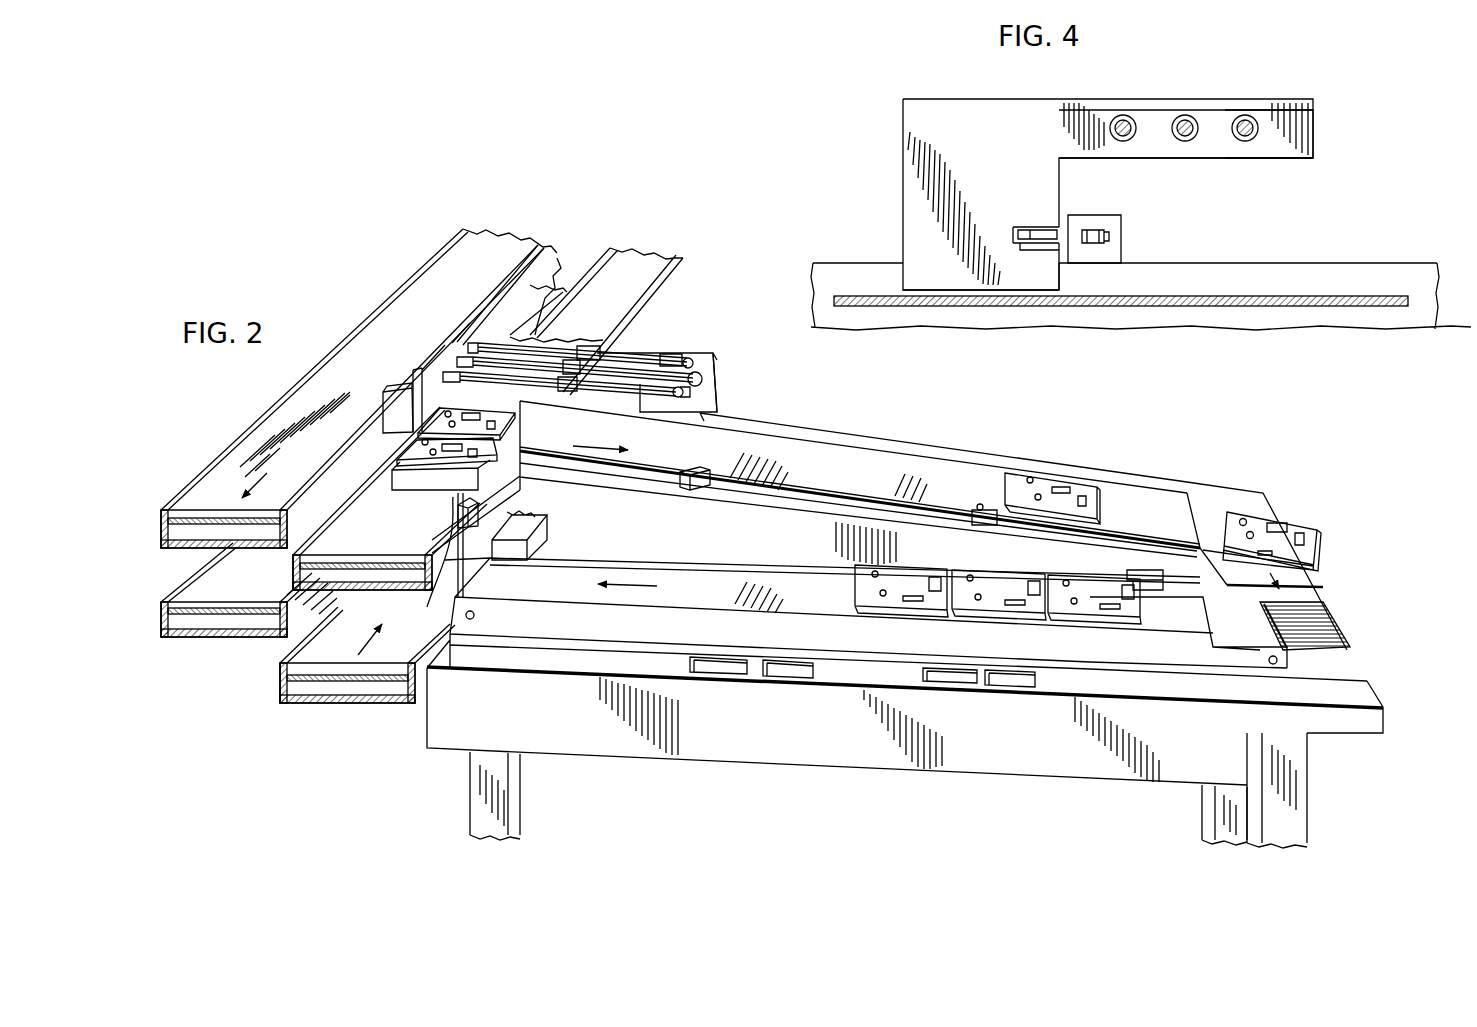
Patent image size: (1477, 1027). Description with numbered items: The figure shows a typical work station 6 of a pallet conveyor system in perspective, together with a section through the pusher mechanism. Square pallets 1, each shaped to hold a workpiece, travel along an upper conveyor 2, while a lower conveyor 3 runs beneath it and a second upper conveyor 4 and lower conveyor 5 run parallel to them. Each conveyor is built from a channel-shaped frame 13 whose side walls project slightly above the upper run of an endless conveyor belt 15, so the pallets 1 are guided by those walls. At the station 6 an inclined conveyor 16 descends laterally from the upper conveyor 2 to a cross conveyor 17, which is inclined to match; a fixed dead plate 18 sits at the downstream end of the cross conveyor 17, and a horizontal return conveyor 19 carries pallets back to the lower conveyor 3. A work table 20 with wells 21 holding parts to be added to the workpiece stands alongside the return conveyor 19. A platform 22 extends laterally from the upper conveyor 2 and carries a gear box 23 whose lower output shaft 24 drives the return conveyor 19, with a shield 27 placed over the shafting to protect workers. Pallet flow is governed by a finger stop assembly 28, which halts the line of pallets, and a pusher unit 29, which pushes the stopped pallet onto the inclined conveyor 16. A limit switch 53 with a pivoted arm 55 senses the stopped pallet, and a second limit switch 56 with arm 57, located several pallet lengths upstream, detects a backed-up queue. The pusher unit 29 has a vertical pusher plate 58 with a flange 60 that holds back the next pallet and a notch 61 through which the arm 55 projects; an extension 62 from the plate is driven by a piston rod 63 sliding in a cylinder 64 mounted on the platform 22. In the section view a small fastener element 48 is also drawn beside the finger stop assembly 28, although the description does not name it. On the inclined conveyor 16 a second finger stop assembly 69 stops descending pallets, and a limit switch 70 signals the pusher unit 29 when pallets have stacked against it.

In FIG. 2, the pallet 1 is at (500, 412).
In FIG. 2, the upper conveyor 2 is at (372, 595).
In FIG. 4, the upper conveyor 2 is at (1322, 232).
In FIG. 2, the lower conveyor 3 is at (337, 705).
In FIG. 2, the second upper conveyor 4 is at (237, 440).
In FIG. 2, the lower conveyor 5 is at (172, 580).
In FIG. 2, the station 6 is at (849, 695).
In FIG. 2, the channel-shaped frame 13 is at (160, 530).
In FIG. 4, the channel-shaped frame 13 is at (1398, 238).
In FIG. 2, the endless conveyor belt 15 is at (418, 297).
In FIG. 4, the endless conveyor belt 15 is at (1296, 306).
In FIG. 2, the inclined conveyor 16 is at (921, 418).
In FIG. 2, the cross conveyor 17 is at (1329, 586).
In FIG. 2, the fixed dead plate 18 is at (1343, 638).
In FIG. 2, the horizontal return conveyor 19 is at (771, 544).
In FIG. 2, the work table 20 is at (1140, 688).
In FIG. 2, the wells 21 is at (789, 679).
In FIG. 2, the platform 22 is at (701, 356).
In FIG. 2, the gear box 23 is at (715, 386).
In FIG. 2, the lower output shaft 24 is at (543, 494).
In FIG. 2, the shield 27 is at (777, 432).
In FIG. 4, the finger stop assembly 28 is at (1121, 212).
In FIG. 2, the pusher unit 29 is at (450, 343).
In FIG. 4, the pusher unit 29 is at (1243, 104).
In FIG. 4, the adjusting screw 48 is at (1110, 236).
In FIG. 4, the limit switch 53 is at (1035, 244).
In FIG. 4, the arm 55 is at (1027, 238).
In FIG. 2, the second limit switch 56 is at (428, 560).
In FIG. 2, the pivoted arm 57 is at (455, 506).
In FIG. 2, the pusher plate 58 is at (431, 386).
In FIG. 4, the pusher plate 58 is at (954, 108).
In FIG. 2, the flange 60 is at (382, 394).
In FIG. 4, the notch 61 is at (1016, 226).
In FIG. 2, the extension 62 is at (523, 273).
In FIG. 4, the extension 62 is at (1308, 121).
In FIG. 2, the piston rod 63 is at (534, 366).
In FIG. 4, the piston rod 63 is at (1187, 116).
In FIG. 2, the cylinder 64 is at (614, 370).
In FIG. 2, the second finger stop assembly 69 is at (977, 508).
In FIG. 2, the limit switch 70 is at (693, 486).